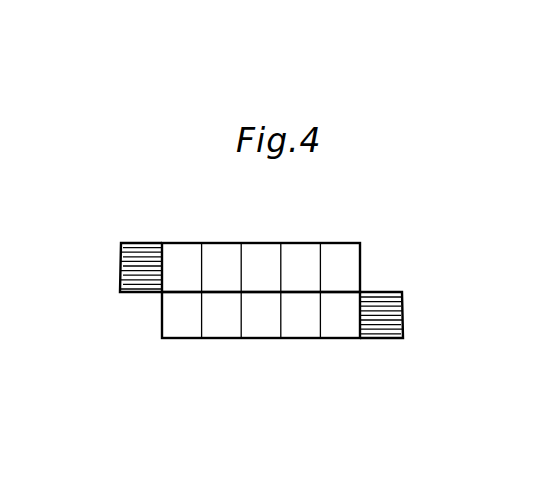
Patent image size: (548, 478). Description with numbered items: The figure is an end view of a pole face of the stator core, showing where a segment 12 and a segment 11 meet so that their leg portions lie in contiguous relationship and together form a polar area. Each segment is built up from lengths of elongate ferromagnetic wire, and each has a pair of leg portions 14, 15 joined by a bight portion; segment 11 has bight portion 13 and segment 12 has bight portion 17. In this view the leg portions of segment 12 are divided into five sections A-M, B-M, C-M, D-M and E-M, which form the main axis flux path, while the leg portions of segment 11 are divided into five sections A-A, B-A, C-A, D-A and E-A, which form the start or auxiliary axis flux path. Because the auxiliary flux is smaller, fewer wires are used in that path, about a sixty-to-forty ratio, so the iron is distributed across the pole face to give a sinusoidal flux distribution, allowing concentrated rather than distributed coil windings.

The segment 11 is at (167, 339).
The segment 12 is at (362, 245).
The bight portion 13 is at (387, 341).
The leg portion 14 is at (262, 340).
The leg portion 15 is at (264, 242).
The bight portion 17 is at (138, 241).